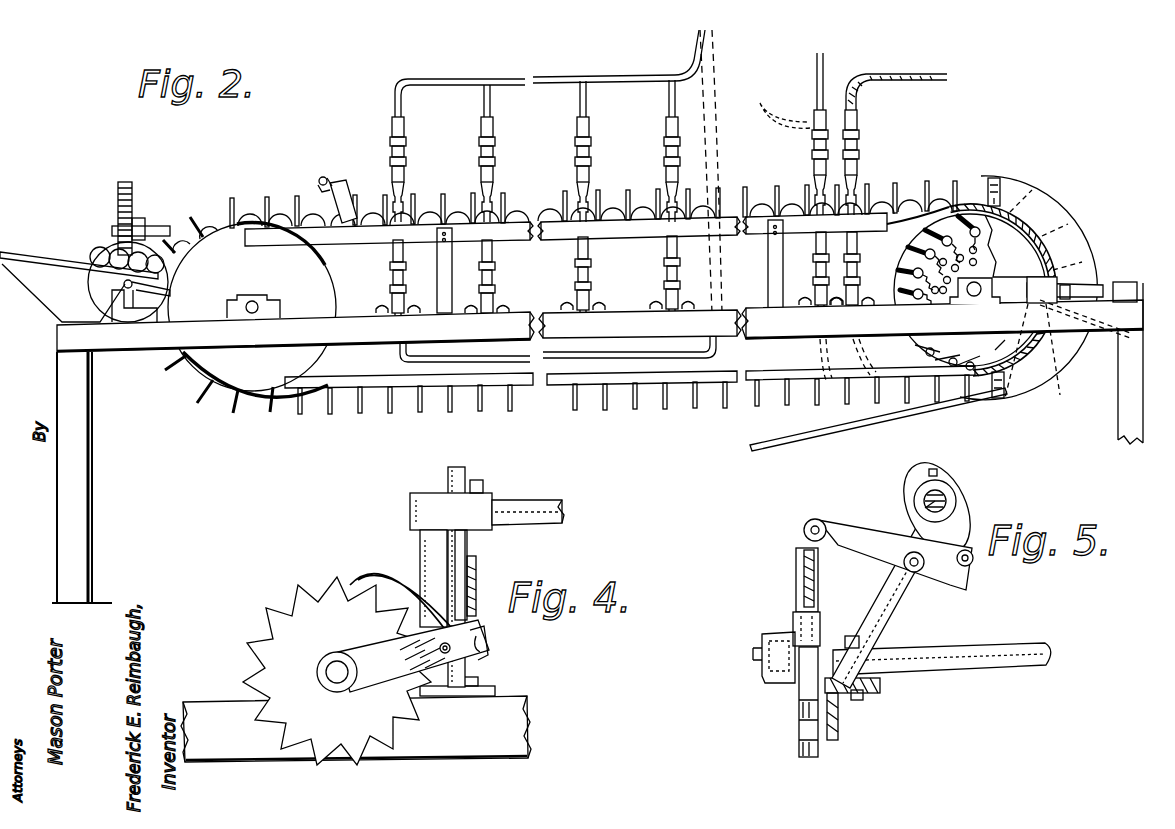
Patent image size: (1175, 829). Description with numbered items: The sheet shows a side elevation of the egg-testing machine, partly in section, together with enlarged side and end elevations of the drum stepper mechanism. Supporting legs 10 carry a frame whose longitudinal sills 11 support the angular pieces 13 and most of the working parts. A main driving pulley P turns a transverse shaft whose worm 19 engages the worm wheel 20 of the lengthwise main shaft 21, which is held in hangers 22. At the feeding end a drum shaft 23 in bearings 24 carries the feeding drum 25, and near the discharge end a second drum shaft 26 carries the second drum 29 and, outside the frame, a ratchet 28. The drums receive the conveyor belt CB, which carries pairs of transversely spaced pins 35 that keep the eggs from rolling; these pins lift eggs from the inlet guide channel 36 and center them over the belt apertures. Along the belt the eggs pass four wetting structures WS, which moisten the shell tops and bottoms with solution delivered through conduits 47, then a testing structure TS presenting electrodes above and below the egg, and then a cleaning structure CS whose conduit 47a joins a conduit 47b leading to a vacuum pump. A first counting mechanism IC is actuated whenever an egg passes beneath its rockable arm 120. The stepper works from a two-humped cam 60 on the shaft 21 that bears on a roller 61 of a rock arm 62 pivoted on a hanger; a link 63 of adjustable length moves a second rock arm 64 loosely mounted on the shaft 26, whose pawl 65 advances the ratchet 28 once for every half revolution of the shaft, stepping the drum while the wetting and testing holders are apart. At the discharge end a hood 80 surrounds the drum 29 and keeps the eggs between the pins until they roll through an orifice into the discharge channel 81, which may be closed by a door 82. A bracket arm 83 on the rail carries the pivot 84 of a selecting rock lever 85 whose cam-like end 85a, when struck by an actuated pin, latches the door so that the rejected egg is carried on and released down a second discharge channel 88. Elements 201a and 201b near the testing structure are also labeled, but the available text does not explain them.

In FIG. 2, the supporting legs 10 is at (78, 411).
In FIG. 2, the longitudinal sills 11 is at (600, 326).
In FIG. 4, the longitudinal sills 11 is at (356, 729).
In FIG. 5, the longitudinal sills 11 is at (840, 722).
In FIG. 2, the angular pieces 13 is at (440, 279).
In FIG. 2, the worm 19 is at (100, 256).
In FIG. 2, the worm wheel 20 is at (131, 199).
In FIG. 2, the main shaft 21 is at (158, 226).
In FIG. 4, the main shaft 21 is at (528, 498).
In FIG. 5, the main shaft 21 is at (926, 500).
In FIG. 4, the hangers 22 is at (425, 494).
In FIG. 5, the hangers 22 is at (895, 620).
In FIG. 2, the drum shaft 23 is at (245, 295).
In FIG. 2, the bearings 24 is at (240, 303).
In FIG. 2, the feeding drum 25 is at (252, 307).
In FIG. 2, the second drum shaft 26 is at (986, 283).
In FIG. 4, the second drum shaft 26 is at (332, 668).
In FIG. 5, the second drum shaft 26 is at (992, 652).
In FIG. 4, the ratchet 28 is at (300, 610).
In FIG. 5, the ratchet 28 is at (799, 718).
In FIG. 2, the second drum 29 is at (932, 228).
In FIG. 2, the pins 35 is at (267, 200).
In FIG. 2, the guide channel 36 is at (14, 256).
In FIG. 2, the supply conduit 47 is at (605, 68).
In FIG. 2, the conduit 47a is at (903, 74).
In FIG. 2, the conduit 47b is at (846, 357).
In FIG. 4, the cam 60 is at (463, 466).
In FIG. 5, the cam 60 is at (937, 468).
In FIG. 5, the roller 61 is at (975, 560).
In FIG. 4, the rock arm 62 is at (470, 543).
In FIG. 5, the rock arm 62 is at (862, 538).
In FIG. 4, the link 63 is at (478, 568).
In FIG. 5, the link 63 is at (800, 560).
In FIG. 4, the rock arm 64 is at (490, 648).
In FIG. 5, the rock arm 64 is at (793, 622).
In FIG. 4, the pawl 65 is at (378, 572).
In FIG. 5, the pawl 65 is at (795, 583).
In FIG. 2, the hood 80 is at (1040, 204).
In FIG. 2, the discharge channel 81 is at (1095, 330).
In FIG. 2, the door 82 is at (1071, 284).
In FIG. 2, the bracket arm 83 is at (1050, 318).
In FIG. 2, the pivot 84 is at (1037, 378).
In FIG. 2, the selecting rock lever 85 is at (1096, 289).
In FIG. 2, the cam-like end 85a is at (1036, 300).
In FIG. 2, the second discharge channel 88 is at (878, 425).
In FIG. 2, the rockable actuating arm 120 is at (318, 186).
In FIG. 2, the hose 201a is at (790, 88).
In FIG. 2, the hose 201b is at (817, 282).
In FIG. 2, the main driving pulley P is at (93, 290).
In FIG. 2, the first counting mechanism IC is at (337, 183).
In FIG. 2, the wetting structures WS is at (665, 269).
In FIG. 2, the testing structure TS is at (812, 151).
In FIG. 2, the cleaning structure CS is at (859, 149).
In FIG. 2, the conveyor belt CB is at (342, 378).